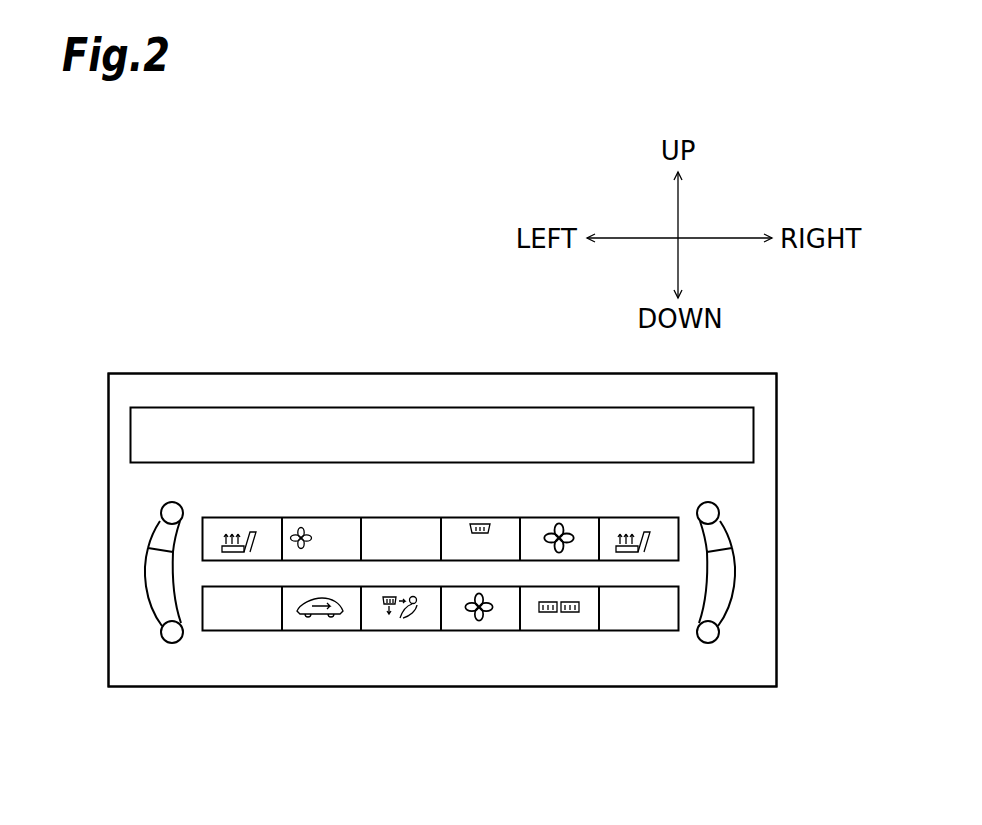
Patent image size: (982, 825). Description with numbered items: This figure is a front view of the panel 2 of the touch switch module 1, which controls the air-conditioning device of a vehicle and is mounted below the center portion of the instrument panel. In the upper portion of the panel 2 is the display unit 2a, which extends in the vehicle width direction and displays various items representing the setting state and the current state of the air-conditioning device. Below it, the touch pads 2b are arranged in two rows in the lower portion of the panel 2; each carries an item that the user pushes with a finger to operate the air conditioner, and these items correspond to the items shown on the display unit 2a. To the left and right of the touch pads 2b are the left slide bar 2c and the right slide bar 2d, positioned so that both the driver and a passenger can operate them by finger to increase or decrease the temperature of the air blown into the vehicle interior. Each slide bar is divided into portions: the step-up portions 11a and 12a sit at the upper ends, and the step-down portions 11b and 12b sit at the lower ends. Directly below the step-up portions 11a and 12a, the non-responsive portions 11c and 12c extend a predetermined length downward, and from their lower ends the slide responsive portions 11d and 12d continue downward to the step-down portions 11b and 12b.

The touch switch module 1 is at (327, 302).
The panel 2 is at (190, 390).
The display unit 2a is at (145, 431).
The touch pads 2b is at (312, 635).
The left slide bar 2c is at (171, 645).
The right slide bar 2d is at (707, 645).
The step-up portion 11a is at (170, 514).
The step-down portion 11b is at (168, 633).
The non-responsive portion 11c is at (163, 543).
The slide responsive portion 11d is at (160, 590).
The step-up portion 12a is at (712, 516).
The step-down portion 12b is at (712, 633).
The non-responsive portion 12c is at (716, 543).
The slide responsive portion 12d is at (718, 592).